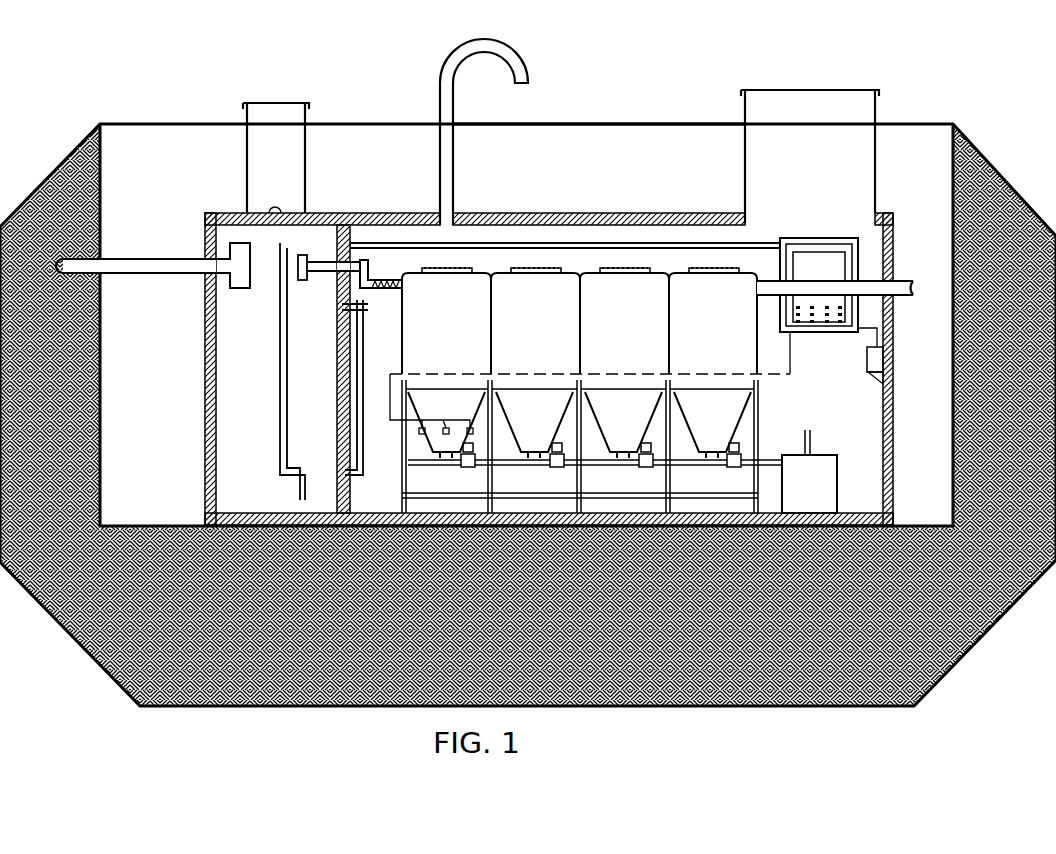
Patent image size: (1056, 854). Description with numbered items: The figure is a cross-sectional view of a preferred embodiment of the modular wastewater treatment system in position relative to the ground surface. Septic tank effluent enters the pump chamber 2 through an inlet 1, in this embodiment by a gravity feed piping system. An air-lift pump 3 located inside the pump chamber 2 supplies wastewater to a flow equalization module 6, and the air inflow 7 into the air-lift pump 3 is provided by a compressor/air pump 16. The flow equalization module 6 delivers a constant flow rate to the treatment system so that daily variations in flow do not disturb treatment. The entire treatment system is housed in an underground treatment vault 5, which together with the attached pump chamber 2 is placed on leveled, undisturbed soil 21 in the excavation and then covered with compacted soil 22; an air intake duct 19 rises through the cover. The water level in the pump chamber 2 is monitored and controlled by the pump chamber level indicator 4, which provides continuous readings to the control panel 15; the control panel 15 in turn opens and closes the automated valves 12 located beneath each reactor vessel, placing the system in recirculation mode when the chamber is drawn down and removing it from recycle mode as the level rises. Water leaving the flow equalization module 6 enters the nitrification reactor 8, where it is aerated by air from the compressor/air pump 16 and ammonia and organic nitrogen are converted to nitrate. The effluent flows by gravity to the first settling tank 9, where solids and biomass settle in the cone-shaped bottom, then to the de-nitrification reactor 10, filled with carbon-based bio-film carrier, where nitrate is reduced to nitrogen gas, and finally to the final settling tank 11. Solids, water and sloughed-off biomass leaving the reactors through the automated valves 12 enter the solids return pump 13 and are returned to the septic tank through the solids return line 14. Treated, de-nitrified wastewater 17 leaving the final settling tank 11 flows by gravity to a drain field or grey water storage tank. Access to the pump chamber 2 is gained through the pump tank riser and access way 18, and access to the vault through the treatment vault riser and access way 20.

The pump chamber inlet 1 is at (60, 265).
The pump chamber 2 is at (205, 402).
The air-lift pump 3 is at (280, 395).
The pump chamber level indicator 4 is at (364, 347).
The underground treatment vault 5 is at (380, 213).
The flow equalization module 6 is at (384, 280).
The air inflow into air-lift pump 7 is at (493, 277).
The nitrification reactor 8 is at (458, 319).
The settling tank 9 is at (547, 319).
The de-nitrification reactor 10 is at (639, 319).
The settling tank 11 is at (727, 319).
The automated valves 12 is at (728, 467).
The solids return pump 13 is at (837, 480).
The solids return line 14 is at (810, 440).
The control panel 15 is at (820, 332).
The compressor/air pump 16 is at (867, 365).
The treated, de-nitrified wastewater 17 is at (940, 275).
The pump tank riser and access way 18 is at (247, 172).
The air intake duct 19 is at (440, 152).
The treatment vault riser and access way 20 is at (875, 166).
The undisturbed soil 21 is at (528, 415).
The compacted soil cover 22 is at (599, 153).